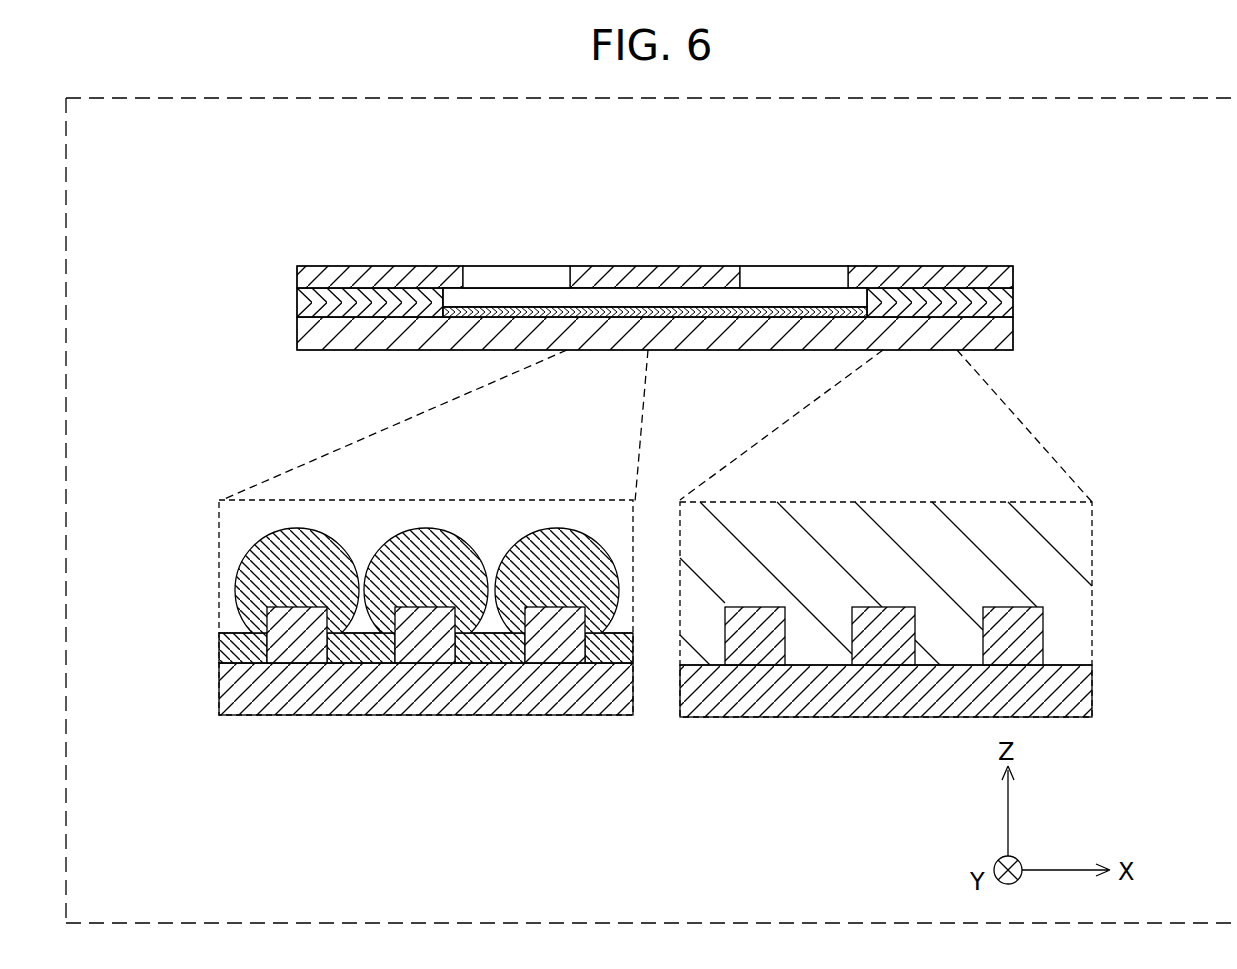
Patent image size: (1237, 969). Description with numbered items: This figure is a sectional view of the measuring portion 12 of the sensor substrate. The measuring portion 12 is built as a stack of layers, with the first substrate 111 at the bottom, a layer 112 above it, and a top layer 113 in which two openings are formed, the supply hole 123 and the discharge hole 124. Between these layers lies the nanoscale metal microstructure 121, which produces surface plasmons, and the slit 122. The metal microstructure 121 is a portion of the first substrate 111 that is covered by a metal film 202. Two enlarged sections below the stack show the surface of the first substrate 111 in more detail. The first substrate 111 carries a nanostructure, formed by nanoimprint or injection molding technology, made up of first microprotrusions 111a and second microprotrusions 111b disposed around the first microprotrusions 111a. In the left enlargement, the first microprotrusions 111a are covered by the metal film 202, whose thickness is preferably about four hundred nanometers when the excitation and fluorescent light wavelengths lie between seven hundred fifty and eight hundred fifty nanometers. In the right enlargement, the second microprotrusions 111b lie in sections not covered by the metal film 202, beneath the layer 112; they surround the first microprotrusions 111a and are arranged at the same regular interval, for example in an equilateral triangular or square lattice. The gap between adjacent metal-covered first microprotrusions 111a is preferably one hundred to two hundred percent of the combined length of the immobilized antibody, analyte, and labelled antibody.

The measuring portion 12 is at (656, 427).
The first substrate 111 is at (1013, 330).
The first microprotrusions 111a is at (292, 600).
The second microprotrusions 111b is at (1003, 607).
The insulating layer 112 is at (1013, 303).
The electrode layer 113 is at (1005, 270).
The metal microstructure 121 is at (528, 308).
The slit 122 is at (482, 298).
The supply hole 123 is at (508, 265).
The discharge hole 124 is at (797, 265).
The metal film 202 is at (447, 532).